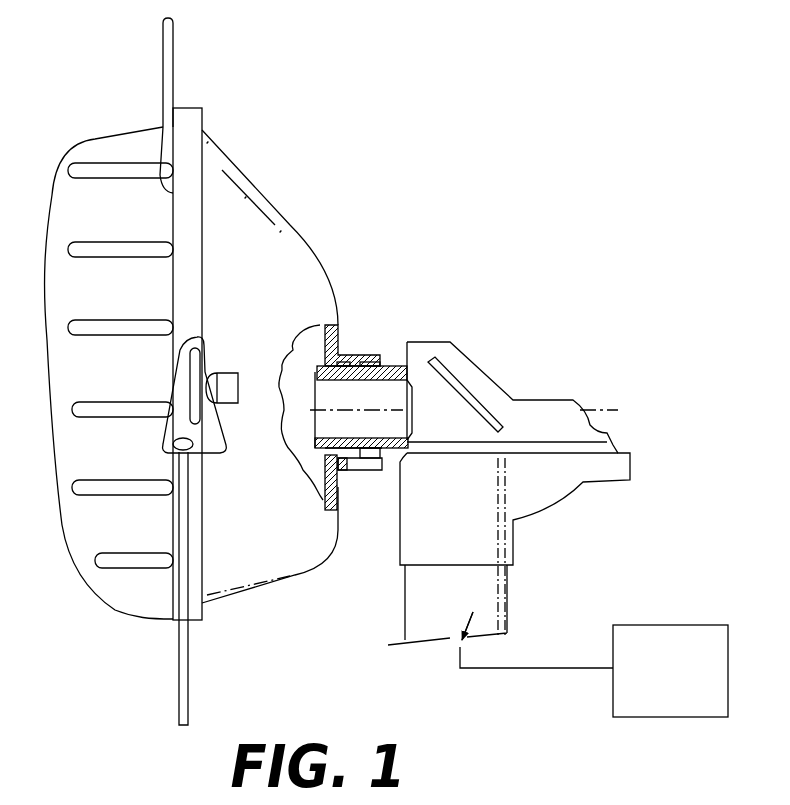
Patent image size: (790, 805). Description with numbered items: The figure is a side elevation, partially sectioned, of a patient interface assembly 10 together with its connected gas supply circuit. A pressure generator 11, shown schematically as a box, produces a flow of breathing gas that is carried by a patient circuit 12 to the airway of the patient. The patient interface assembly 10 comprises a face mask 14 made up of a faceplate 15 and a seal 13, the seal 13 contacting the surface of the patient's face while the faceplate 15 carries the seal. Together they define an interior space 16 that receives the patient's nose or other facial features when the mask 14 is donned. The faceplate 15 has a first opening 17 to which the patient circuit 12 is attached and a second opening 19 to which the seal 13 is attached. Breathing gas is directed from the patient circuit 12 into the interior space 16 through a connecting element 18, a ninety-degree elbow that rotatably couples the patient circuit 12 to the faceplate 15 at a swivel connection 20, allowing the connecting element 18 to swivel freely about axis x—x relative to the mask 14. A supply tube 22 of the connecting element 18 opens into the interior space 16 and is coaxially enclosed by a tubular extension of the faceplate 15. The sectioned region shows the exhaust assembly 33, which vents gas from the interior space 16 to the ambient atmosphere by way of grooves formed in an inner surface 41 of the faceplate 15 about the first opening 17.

The patient interface assembly 10 is at (303, 142).
The pressure generator 11 is at (680, 681).
The patient circuit 12 is at (487, 588).
The seal 13 is at (95, 148).
The face mask 14 is at (210, 160).
The faceplate 15 is at (282, 210).
The interior space 16 is at (337, 333).
The first opening 17 is at (341, 460).
The connecting element 18 is at (522, 402).
The second opening 19 is at (160, 180).
The swivel connection 20 is at (387, 363).
The supply tube 22 is at (400, 370).
The exhaust assembly 33 is at (401, 275).
The inner surface 41 is at (320, 479).